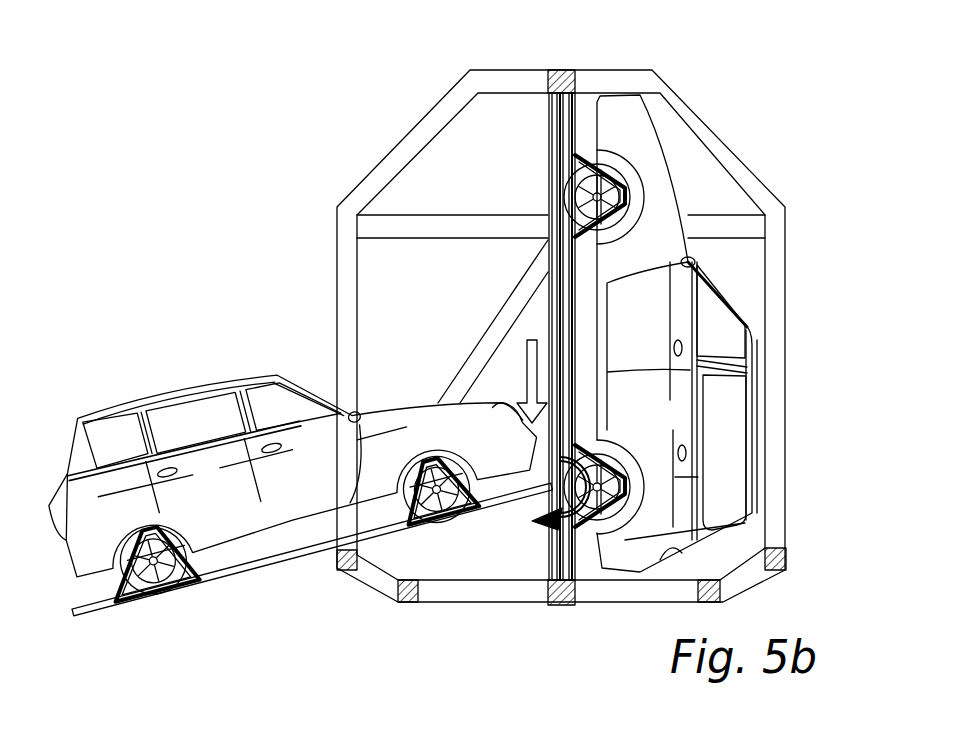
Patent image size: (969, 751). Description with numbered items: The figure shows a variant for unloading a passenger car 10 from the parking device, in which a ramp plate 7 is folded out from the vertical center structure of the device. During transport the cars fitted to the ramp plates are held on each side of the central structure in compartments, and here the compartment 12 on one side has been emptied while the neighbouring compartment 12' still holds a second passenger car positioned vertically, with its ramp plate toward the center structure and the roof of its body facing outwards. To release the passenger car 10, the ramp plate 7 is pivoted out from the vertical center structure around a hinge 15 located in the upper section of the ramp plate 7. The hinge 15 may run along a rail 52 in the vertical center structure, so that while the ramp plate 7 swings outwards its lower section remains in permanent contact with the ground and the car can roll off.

The passenger car 10 is at (178, 400).
The ramp plate 7 is at (273, 567).
The compartment 12 is at (510, 336).
The compartment 12' is at (720, 333).
The hinge 15 is at (532, 522).
The rail 52 is at (556, 113).